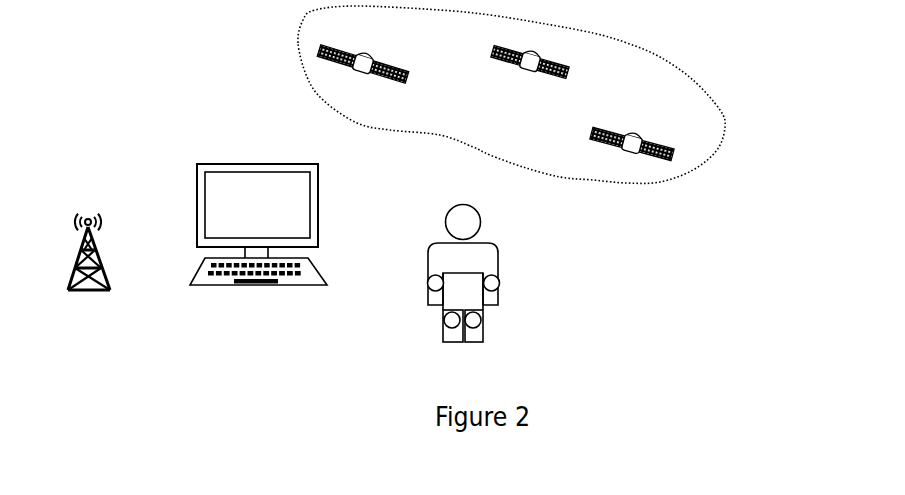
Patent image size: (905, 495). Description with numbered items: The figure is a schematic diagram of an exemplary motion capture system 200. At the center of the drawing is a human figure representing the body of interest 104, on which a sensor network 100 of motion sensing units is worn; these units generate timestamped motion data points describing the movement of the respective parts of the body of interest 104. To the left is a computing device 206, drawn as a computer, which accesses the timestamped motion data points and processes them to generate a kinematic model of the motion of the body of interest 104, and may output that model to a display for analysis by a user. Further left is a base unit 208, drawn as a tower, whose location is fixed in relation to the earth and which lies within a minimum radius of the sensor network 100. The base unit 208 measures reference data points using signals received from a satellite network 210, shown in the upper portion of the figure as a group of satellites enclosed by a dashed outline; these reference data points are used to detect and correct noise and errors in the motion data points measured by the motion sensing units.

The sensor network 100 is at (512, 274).
The body of interest 104 is at (482, 274).
The motion capture system 200 is at (123, 363).
The computing device 206 is at (277, 324).
The base unit 208 is at (107, 323).
The satellite network 210 is at (725, 110).